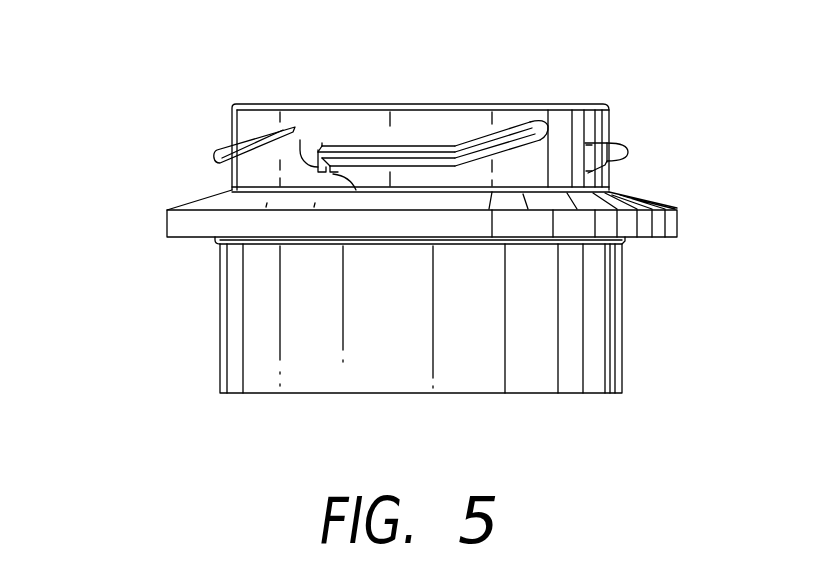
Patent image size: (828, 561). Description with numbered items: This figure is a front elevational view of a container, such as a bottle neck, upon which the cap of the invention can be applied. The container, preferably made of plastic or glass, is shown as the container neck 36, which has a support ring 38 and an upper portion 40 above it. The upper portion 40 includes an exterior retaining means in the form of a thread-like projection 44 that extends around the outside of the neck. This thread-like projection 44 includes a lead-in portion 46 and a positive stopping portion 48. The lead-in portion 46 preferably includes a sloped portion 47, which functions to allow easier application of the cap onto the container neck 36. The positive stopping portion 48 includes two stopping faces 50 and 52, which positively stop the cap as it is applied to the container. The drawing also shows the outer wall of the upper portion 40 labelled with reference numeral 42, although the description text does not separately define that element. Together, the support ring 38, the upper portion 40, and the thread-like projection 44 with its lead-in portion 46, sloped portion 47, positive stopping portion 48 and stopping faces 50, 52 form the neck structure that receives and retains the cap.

The container neck 36 is at (178, 320).
The support ring 38 is at (167, 226).
The upper portion 40 is at (230, 127).
The upper cylindrical wall 42 is at (603, 103).
The thread-like projection 44 is at (404, 145).
The lead-in portion 46 is at (482, 132).
The sloped portion 47 is at (522, 128).
The positive stopping portion 48 is at (326, 145).
The stopping face 50 is at (356, 190).
The stopping face 52 is at (300, 140).